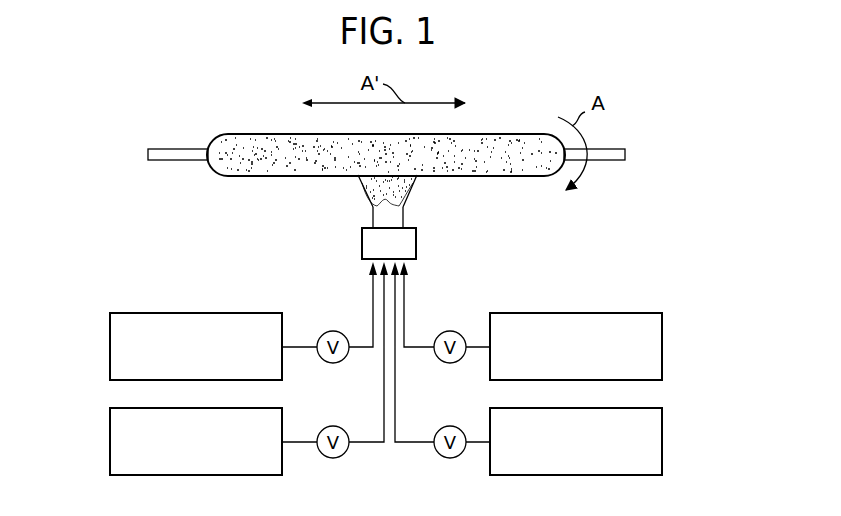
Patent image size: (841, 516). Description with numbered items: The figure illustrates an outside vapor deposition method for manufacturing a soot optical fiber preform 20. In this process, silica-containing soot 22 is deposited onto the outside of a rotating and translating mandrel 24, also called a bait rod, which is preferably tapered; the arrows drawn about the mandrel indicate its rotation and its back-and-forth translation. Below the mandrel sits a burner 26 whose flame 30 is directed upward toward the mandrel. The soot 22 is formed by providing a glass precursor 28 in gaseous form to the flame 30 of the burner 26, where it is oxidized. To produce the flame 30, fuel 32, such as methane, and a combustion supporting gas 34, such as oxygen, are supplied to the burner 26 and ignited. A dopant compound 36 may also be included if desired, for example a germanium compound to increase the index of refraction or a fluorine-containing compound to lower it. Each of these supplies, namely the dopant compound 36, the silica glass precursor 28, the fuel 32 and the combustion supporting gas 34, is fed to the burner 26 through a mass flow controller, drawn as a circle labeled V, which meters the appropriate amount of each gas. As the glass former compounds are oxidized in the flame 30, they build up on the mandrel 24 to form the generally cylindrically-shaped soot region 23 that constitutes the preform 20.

The soot optical fiber preform 20 is at (495, 133).
The silica-containing soot 22 is at (405, 183).
The soot region 23 is at (246, 134).
The mandrel 24 is at (178, 149).
The burner 26 is at (416, 245).
The glass precursor 28 is at (641, 313).
The flame 30 is at (373, 216).
The fuel 32 is at (123, 313).
The combustion supporting gas 34 is at (123, 408).
The dopant compound 36 is at (641, 408).